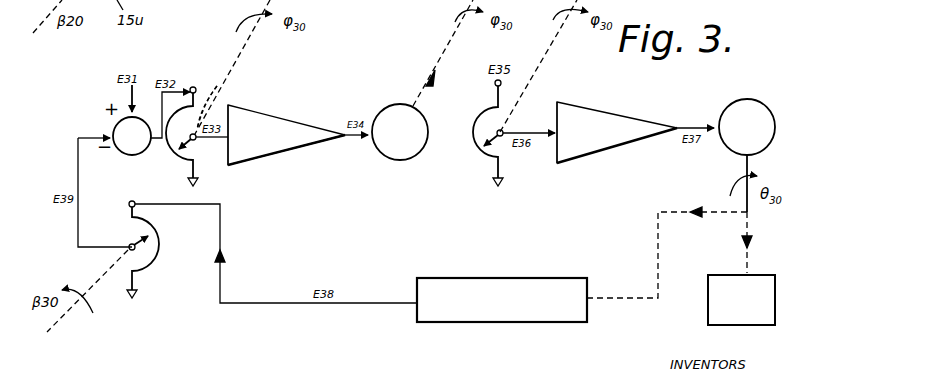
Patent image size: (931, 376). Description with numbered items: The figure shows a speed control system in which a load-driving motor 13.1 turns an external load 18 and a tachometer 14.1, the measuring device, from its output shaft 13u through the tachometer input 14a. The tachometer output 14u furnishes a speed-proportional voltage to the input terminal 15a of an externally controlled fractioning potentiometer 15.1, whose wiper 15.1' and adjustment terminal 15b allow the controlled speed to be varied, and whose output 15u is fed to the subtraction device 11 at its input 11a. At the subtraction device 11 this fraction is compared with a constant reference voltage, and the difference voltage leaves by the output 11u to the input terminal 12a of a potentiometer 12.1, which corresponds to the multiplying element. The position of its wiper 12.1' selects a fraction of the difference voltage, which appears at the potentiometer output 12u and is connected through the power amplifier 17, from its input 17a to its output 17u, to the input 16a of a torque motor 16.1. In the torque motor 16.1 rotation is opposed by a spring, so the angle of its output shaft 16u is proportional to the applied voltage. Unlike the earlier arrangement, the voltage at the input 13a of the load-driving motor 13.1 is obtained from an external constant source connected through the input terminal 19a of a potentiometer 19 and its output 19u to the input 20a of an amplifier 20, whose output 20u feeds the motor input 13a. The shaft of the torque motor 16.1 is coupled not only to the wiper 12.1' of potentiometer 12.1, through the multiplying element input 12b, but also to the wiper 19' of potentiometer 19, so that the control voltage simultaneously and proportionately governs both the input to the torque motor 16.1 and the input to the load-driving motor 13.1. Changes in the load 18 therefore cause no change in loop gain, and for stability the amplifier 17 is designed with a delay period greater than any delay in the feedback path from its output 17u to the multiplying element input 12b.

The subtraction device 11 is at (115, 152).
The subtraction device input 11a is at (110, 134).
The subtraction device output 11u is at (152, 144).
The potentiometer input terminal 12a is at (197, 87).
The multiplying element input 12b is at (222, 105).
The potentiometer output 12u is at (200, 157).
The potentiometer 12.1 is at (172, 143).
The wiper 12.1' is at (207, 168).
The motor input 13a is at (715, 124).
The motor 13.1 is at (753, 100).
The motor output shaft 13u is at (748, 155).
The tachometer input 14a is at (593, 290).
The tachometer output 14u is at (413, 310).
The tachometer 14.1 is at (545, 322).
The potentiometer input terminal 15a is at (128, 204).
The potentiometer output 15u is at (128, 245).
The potentiometer wiper terminal 15b is at (118, 253).
The potentiometer 15.1 is at (153, 252).
The wiper 15.1' is at (167, 245).
The torque motor input 16a is at (372, 143).
The torque motor output shaft 16u is at (413, 106).
The torque motor 16.1 is at (407, 160).
The power amplifier 17 is at (342, 137).
The amplifier input 17a is at (243, 115).
The amplifier output 17u is at (343, 160).
The external load 18 is at (778, 275).
The potentiometer 19 is at (480, 141).
The potentiometer input terminal 19a is at (495, 83).
The potentiometer output 19u is at (503, 132).
The wiper 19' is at (472, 146).
The amplifier 20 is at (610, 147).
The amplifier input 20a is at (552, 135).
The amplifier output 20u is at (677, 132).